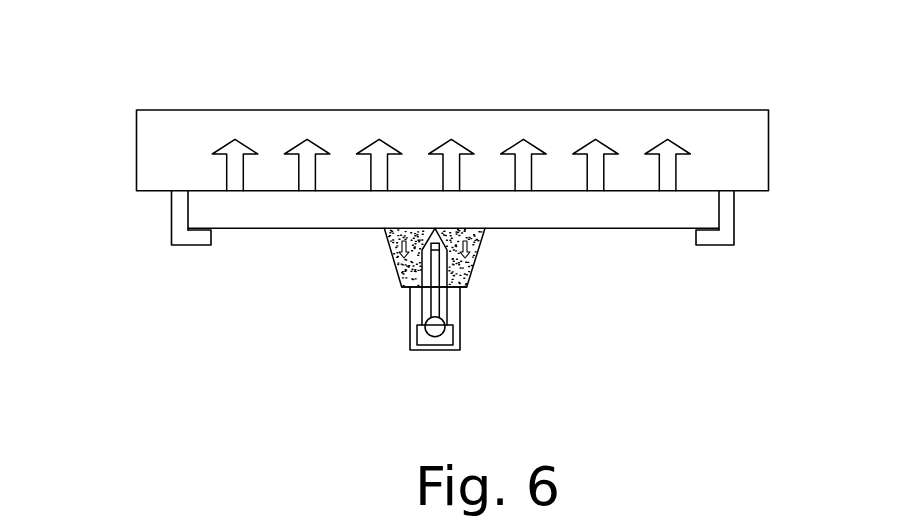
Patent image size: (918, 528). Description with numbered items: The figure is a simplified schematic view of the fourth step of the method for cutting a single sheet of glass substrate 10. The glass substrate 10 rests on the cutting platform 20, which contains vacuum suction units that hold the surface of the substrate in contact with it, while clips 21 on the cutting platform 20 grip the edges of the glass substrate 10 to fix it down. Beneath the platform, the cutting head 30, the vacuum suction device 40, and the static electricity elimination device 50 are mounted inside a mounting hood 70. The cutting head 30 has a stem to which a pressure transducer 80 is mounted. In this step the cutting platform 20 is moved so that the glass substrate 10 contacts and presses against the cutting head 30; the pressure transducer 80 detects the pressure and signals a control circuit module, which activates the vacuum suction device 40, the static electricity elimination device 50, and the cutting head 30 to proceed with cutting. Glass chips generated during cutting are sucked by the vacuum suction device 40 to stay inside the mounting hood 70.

The single sheet of glass substrate 10 is at (607, 217).
The cutting platform 20 is at (162, 172).
The clips 21 is at (177, 238).
The cutting head 30 is at (427, 256).
The vacuum suction device 40 is at (418, 333).
The static electricity elimination device 50 is at (433, 303).
The mounting hood 70 is at (482, 260).
The pressure transducer 80 is at (440, 326).